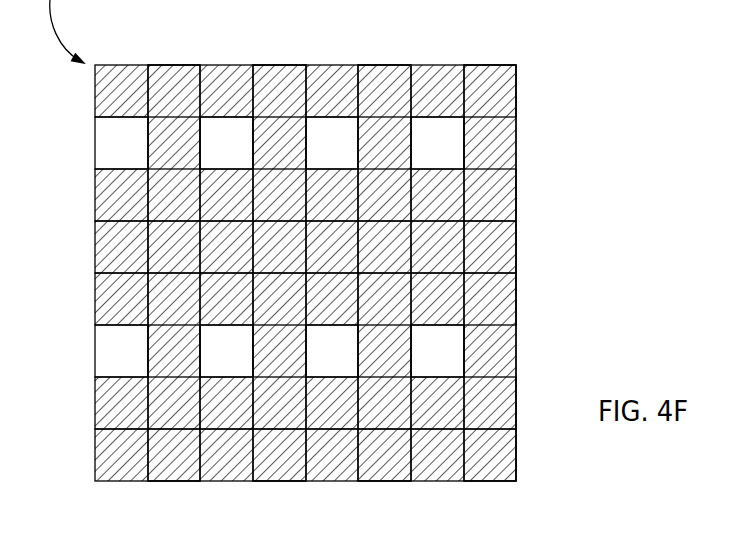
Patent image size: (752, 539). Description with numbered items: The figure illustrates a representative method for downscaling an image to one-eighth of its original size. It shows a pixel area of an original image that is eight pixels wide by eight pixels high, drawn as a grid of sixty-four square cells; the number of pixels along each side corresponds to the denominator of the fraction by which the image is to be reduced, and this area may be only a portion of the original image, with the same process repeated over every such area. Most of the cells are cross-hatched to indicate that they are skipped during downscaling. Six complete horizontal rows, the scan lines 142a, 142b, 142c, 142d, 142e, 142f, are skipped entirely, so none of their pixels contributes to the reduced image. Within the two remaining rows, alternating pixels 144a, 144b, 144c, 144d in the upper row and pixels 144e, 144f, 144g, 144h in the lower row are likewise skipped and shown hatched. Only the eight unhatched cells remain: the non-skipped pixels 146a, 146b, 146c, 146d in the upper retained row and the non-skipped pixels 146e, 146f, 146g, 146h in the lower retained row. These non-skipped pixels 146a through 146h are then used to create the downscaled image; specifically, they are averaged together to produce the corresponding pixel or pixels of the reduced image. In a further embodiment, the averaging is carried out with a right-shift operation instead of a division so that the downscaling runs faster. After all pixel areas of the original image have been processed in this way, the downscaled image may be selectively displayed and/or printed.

The scan line 142a is at (96, 92).
The scan line 142b is at (96, 200).
The scan line 142c is at (96, 247).
The scan line 142d is at (96, 300).
The scan line 142e is at (96, 404).
The scan line 142f is at (96, 459).
The pixel 144a is at (173, 130).
The pixel 144b is at (279, 130).
The pixel 144c is at (384, 130).
The pixel 144d is at (516, 137).
The pixel 144e is at (172, 372).
The pixel 144f is at (278, 372).
The pixel 144g is at (385, 370).
The pixel 144h is at (516, 357).
The non-skipped pixel 146a is at (103, 153).
The non-skipped pixel 146b is at (208, 153).
The non-skipped pixel 146c is at (314, 153).
The non-skipped pixel 146d is at (419, 153).
The non-skipped pixel 146e is at (103, 361).
The non-skipped pixel 146f is at (208, 361).
The non-skipped pixel 146g is at (314, 361).
The non-skipped pixel 146h is at (419, 361).